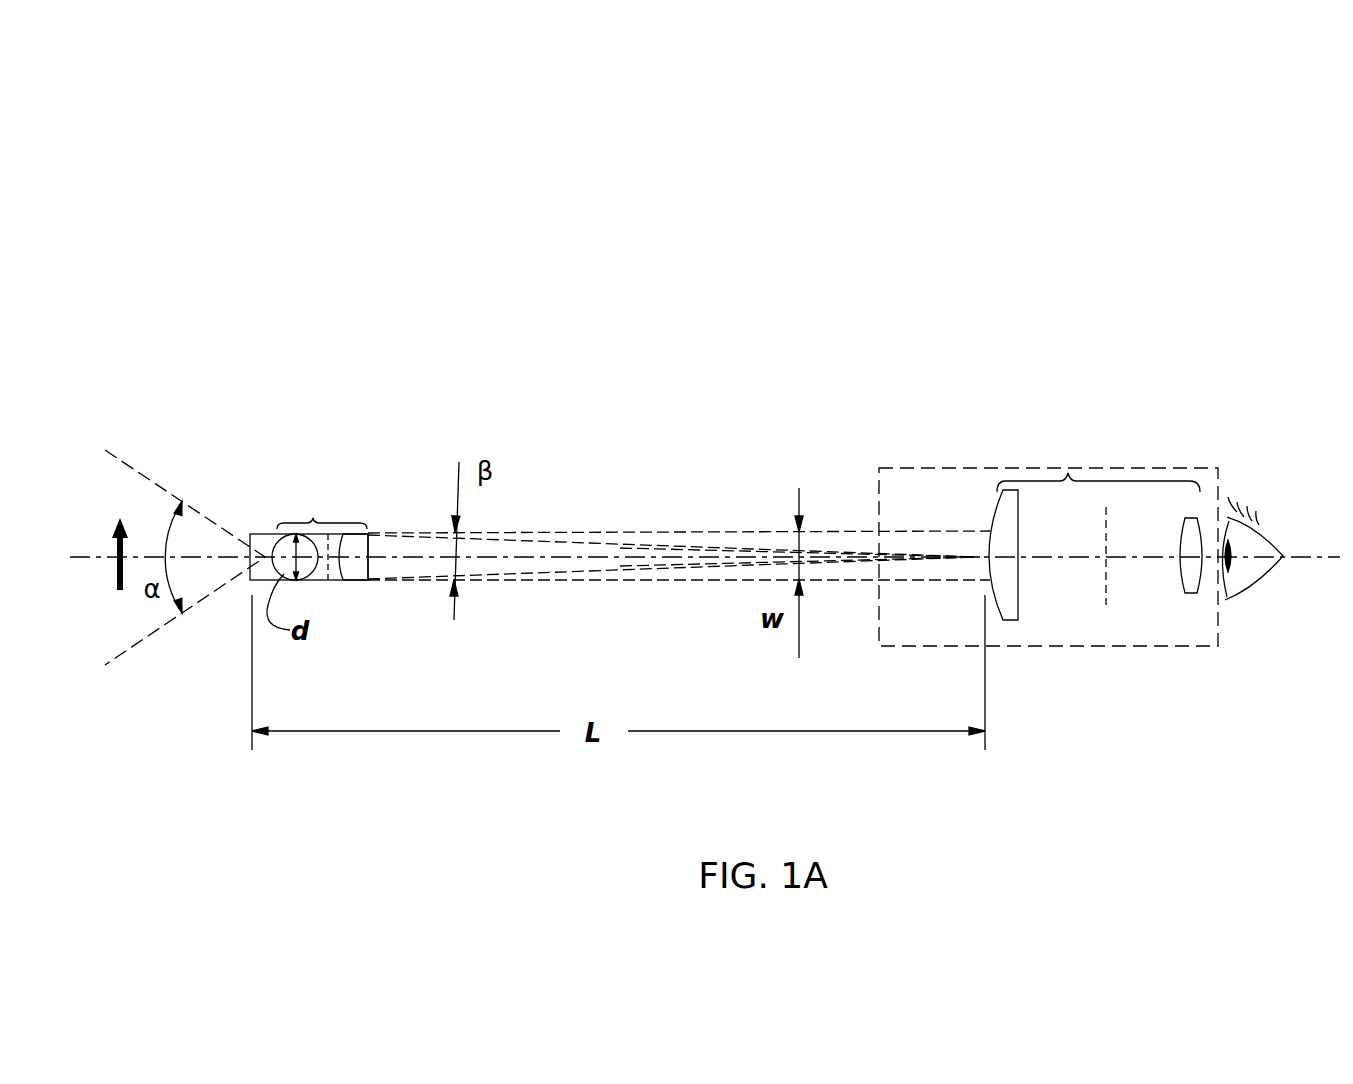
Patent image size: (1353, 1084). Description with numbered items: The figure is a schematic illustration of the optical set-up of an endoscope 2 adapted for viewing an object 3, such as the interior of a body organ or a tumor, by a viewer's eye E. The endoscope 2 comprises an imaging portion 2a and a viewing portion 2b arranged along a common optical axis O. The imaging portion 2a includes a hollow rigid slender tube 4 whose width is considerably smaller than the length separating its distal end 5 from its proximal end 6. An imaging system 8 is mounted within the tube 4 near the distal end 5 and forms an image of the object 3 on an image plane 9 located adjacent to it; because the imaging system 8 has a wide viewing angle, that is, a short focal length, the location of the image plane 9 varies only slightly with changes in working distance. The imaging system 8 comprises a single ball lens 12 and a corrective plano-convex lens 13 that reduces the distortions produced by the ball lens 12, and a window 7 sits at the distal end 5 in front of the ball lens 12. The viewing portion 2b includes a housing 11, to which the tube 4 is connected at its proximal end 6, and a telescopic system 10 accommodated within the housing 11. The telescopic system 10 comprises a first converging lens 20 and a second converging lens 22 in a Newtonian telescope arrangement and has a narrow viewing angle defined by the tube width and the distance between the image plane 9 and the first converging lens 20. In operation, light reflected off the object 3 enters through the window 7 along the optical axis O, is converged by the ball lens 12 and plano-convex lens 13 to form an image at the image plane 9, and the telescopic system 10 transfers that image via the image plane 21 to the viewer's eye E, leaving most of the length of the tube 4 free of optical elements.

The endoscope 2 is at (1172, 203).
The imaging portion 2a is at (503, 383).
The viewing portion 2b is at (1049, 393).
The object 3 is at (116, 592).
The hollow rigid slender tube 4 is at (563, 581).
The distal end 5 is at (272, 490).
The proximal end 6 is at (861, 504).
The window 7 is at (262, 558).
The imaging system 8 is at (313, 518).
The image plane 9 is at (328, 581).
The telescopic system 10 is at (1068, 473).
The housing 11 is at (1052, 647).
The ball lens 12 is at (308, 574).
The plano-convex lens 13 is at (355, 571).
The first converging lens 20 is at (992, 522).
The image plane 21 is at (1120, 513).
The second converging lens 22 is at (1195, 595).
The optical axis O is at (97, 558).
The viewer's eye E is at (1253, 580).